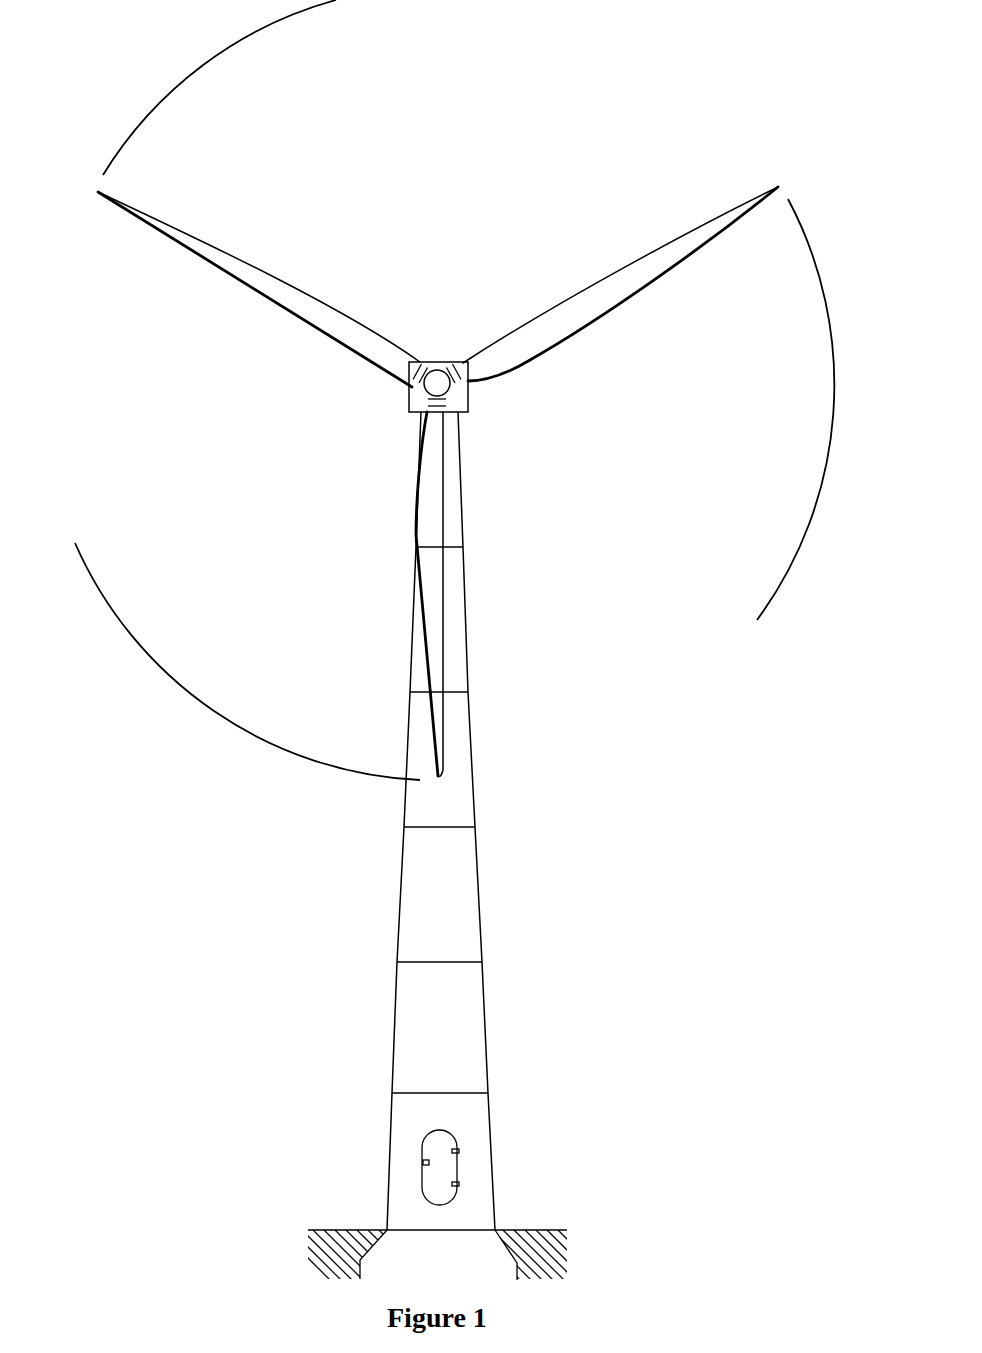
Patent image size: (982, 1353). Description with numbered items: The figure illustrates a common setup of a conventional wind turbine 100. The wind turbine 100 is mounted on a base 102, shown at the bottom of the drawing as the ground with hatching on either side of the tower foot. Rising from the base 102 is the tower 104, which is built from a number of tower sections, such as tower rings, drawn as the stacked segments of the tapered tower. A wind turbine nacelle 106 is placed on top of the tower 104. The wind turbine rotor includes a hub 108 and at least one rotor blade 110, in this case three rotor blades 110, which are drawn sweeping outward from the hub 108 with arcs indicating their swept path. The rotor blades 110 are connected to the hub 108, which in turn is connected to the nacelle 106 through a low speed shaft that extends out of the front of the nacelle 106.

The wind turbine 100 is at (362, 1052).
The base 102 is at (373, 1260).
The tower 104 is at (457, 910).
The wind turbine nacelle 106 is at (468, 412).
The hub 108 is at (410, 387).
The rotor blade 110 is at (435, 653).